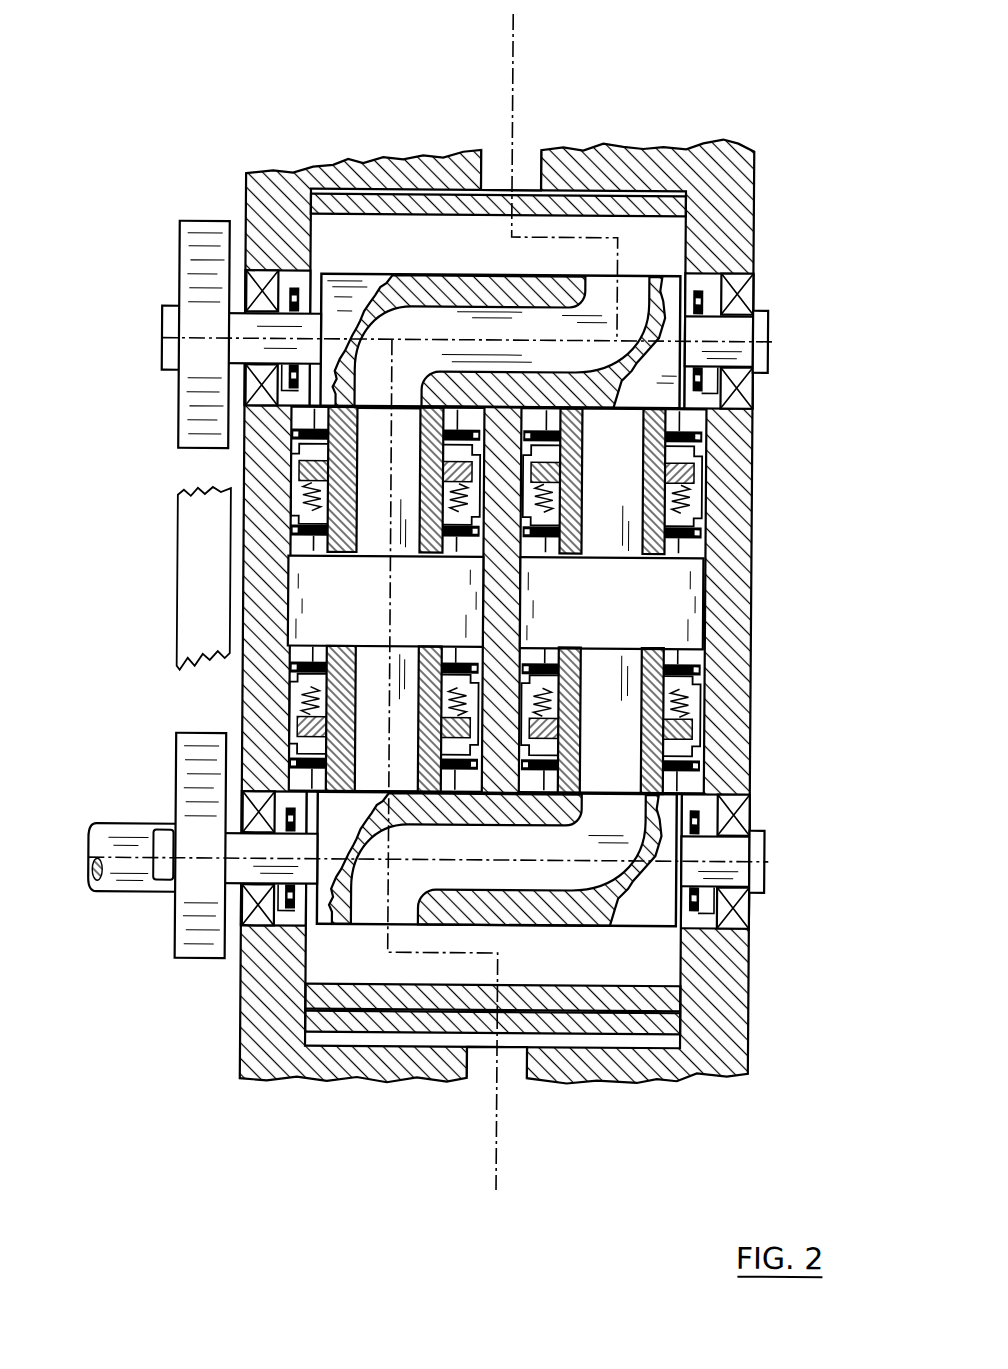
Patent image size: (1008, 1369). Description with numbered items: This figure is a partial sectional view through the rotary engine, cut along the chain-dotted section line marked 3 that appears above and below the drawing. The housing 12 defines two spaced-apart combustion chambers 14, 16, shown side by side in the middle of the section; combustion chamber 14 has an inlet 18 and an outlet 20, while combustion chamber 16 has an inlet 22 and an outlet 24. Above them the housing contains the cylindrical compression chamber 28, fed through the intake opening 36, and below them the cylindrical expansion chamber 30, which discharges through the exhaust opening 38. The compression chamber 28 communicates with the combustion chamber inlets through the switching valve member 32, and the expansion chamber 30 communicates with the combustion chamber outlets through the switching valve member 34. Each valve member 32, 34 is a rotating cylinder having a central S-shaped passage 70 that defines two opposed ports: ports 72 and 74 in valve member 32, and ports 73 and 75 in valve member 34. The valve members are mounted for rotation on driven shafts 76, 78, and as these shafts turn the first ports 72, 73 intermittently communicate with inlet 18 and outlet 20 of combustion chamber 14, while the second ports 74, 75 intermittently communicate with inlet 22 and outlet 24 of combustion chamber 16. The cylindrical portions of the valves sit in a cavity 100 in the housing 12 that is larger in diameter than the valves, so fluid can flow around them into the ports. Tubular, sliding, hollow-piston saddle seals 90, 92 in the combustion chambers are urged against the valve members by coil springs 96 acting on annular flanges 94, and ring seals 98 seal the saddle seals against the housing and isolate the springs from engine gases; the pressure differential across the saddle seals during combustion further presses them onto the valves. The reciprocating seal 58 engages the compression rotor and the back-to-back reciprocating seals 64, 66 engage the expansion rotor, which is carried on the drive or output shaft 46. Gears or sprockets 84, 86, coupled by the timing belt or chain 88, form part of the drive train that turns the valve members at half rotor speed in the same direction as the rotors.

The section line 3- 3 is at (470, 1190).
The housing 12 is at (243, 190).
The first combustion chamber 14 is at (418, 622).
The second combustion chamber 16 is at (622, 623).
The inlet 18 is at (373, 387).
The outlet 20 is at (372, 773).
The inlet 22 is at (627, 423).
The outlet 24 is at (601, 956).
The compression chamber 28 is at (688, 130).
The expansion chamber 30 is at (630, 967).
The valve member 32 is at (606, 612).
The valve member 34 is at (580, 907).
The intake opening 36 is at (498, 165).
The exhaust opening 38 is at (490, 1068).
The drive or output shaft 46 is at (112, 892).
The reciprocating seal 58 is at (608, 207).
The reciprocating seal 64 is at (647, 1000).
The reciprocating seal 66 is at (333, 1023).
The S-shaped passage 70 is at (460, 325).
The first port 72 is at (377, 432).
The first port 73 is at (373, 907).
The second port 74 is at (605, 300).
The second port 75 is at (605, 808).
The driven shaft 76 is at (172, 342).
The driven shaft 78 is at (166, 870).
The gear or sprocket 84 is at (192, 963).
The gear or sprocket 86 is at (180, 262).
The timing belt or chain 88 is at (177, 545).
The saddle seal 90 is at (375, 542).
The saddle seal 92 is at (377, 660).
The annular flange 94 is at (703, 485).
The coil spring 96 is at (698, 500).
The ring seal 98 is at (706, 436).
The cavity 100 is at (297, 805).